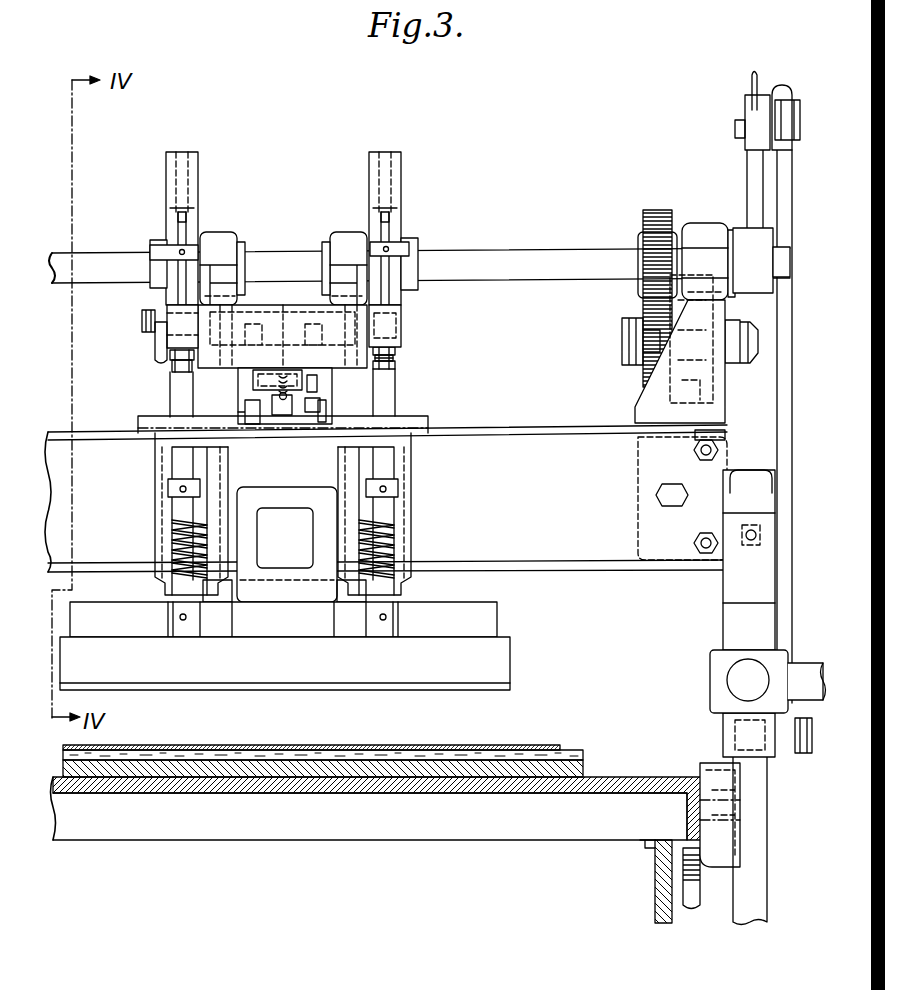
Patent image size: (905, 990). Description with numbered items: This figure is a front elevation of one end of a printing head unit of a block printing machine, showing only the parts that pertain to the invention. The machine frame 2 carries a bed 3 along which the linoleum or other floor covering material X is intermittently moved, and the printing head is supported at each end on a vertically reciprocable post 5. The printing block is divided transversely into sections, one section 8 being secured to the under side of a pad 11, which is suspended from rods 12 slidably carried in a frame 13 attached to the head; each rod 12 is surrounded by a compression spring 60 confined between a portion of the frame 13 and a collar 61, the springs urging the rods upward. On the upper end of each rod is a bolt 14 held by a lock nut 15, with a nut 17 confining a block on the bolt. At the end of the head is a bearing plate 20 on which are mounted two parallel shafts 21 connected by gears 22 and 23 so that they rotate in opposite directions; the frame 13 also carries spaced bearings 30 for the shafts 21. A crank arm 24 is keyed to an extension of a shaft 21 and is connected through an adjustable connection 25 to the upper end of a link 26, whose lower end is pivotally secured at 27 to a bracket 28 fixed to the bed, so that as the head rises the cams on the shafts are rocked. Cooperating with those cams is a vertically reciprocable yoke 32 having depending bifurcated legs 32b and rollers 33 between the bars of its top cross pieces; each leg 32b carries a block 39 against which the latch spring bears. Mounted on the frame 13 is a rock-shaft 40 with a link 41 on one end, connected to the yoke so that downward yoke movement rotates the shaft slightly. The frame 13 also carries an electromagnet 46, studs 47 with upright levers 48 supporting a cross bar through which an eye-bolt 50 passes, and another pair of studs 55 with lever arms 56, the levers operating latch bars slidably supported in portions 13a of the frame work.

The frame 2 is at (656, 906).
The bed 3 is at (422, 835).
The vertically reciprocable post 5 is at (760, 876).
The printing block section 8 is at (500, 672).
The pad 11 is at (488, 614).
The rods 12 is at (180, 464).
The frame 13 is at (158, 518).
The portions of the frame work 13a is at (430, 418).
The bolt 14 is at (394, 359).
The lock nut 15 is at (183, 372).
The nut 17 is at (396, 350).
The bearing plate 20 is at (727, 383).
The shafts 21 is at (556, 246).
The gear 22 is at (645, 216).
The gear 23 is at (647, 355).
The crank arm 24 is at (748, 183).
The adjustable connection 25 is at (738, 118).
The link 26 is at (786, 220).
The pivot 27 is at (806, 752).
The bracket 28 is at (733, 831).
The bearings 30 is at (337, 255).
The yoke 32 is at (168, 152).
The depending bifurcated legs 32b is at (167, 212).
The cam followers or rollers 33 is at (183, 158).
The block 39 is at (160, 248).
The rock-shaft 40 is at (268, 426).
The link 41 is at (158, 347).
The electromagnet 46 is at (278, 346).
The studs 47 is at (308, 420).
The upright levers 48 is at (322, 424).
The eye-bolt 50 is at (285, 405).
The studs 55 is at (320, 380).
The lever arms 56 is at (318, 390).
The compression springs 60 is at (180, 566).
The collar 61 is at (175, 486).
The floor covering material X is at (536, 746).